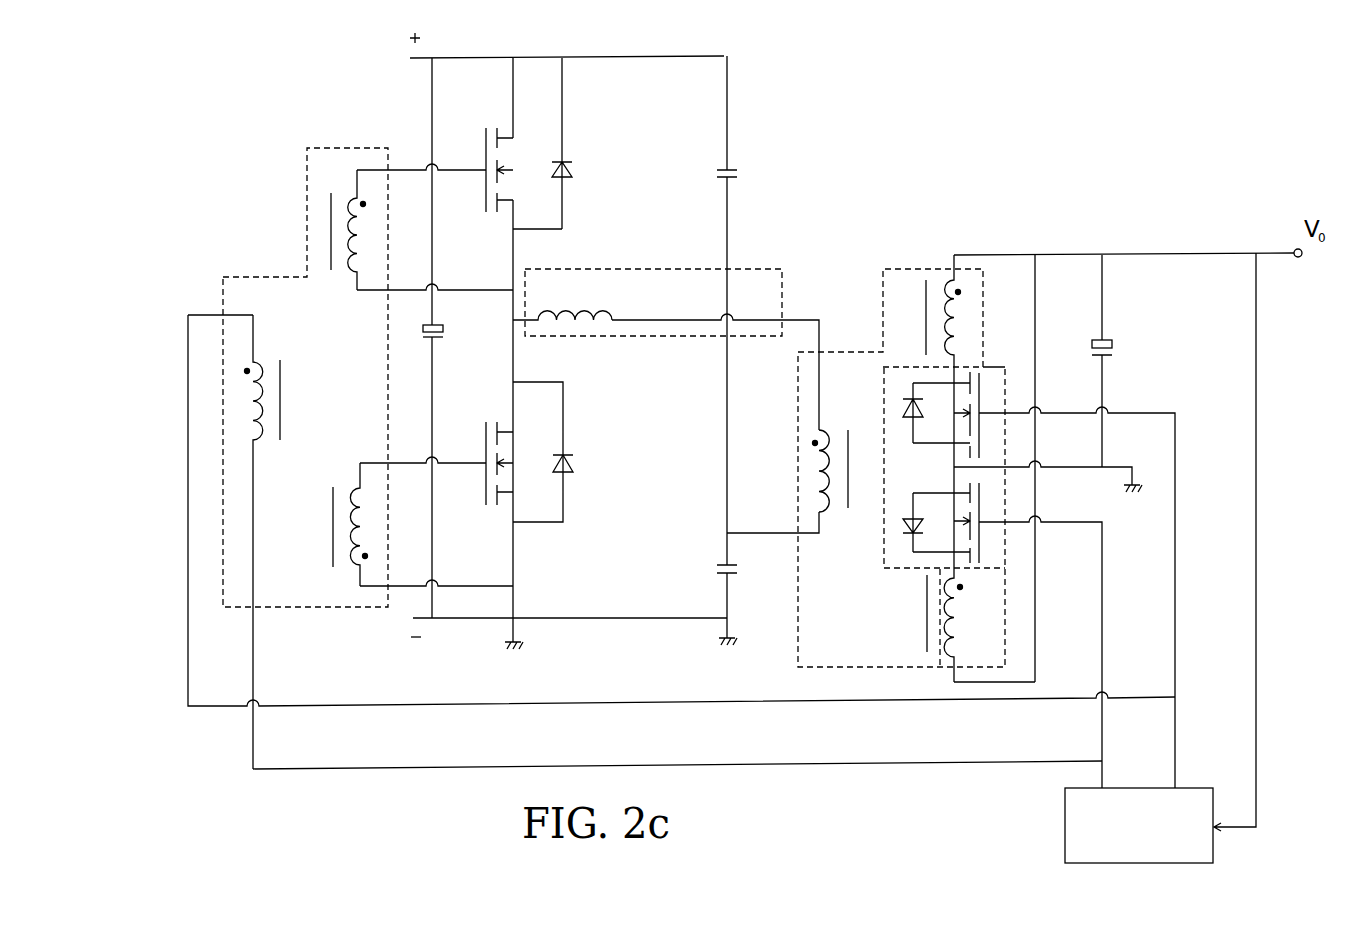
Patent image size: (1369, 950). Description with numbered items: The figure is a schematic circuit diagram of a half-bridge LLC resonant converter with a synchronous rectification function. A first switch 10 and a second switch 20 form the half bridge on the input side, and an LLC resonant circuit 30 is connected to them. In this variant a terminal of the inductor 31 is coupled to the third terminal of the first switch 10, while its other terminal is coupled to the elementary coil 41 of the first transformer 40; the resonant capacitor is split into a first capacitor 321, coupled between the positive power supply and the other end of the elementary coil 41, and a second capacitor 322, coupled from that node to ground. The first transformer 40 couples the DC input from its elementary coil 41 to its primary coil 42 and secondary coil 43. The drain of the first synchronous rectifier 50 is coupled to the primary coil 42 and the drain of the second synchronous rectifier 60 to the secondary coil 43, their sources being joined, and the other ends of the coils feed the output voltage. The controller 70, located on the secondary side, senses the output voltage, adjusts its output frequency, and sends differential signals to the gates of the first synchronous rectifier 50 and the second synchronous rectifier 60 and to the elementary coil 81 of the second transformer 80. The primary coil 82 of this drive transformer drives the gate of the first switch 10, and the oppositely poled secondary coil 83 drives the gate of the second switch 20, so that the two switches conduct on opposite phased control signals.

The first switch 10 is at (568, 142).
The second switch 20 is at (578, 440).
The LLC resonant circuit 30 is at (683, 268).
The inductor 31 is at (585, 310).
The first capacitor 321 is at (742, 165).
The second capacitor 322 is at (745, 572).
The first transformer 40 is at (900, 268).
The elementary coil 41 is at (832, 420).
The primary coil 42 is at (937, 275).
The secondary coil 43 is at (936, 675).
The first synchronous rectifier 50 is at (987, 405).
The second synchronous rectifier 60 is at (987, 510).
The controller 70 is at (1070, 846).
The second transformer 80 is at (240, 276).
The elementary coil 81 is at (265, 352).
The primary coil 82 is at (338, 192).
The secondary coil 83 is at (345, 580).